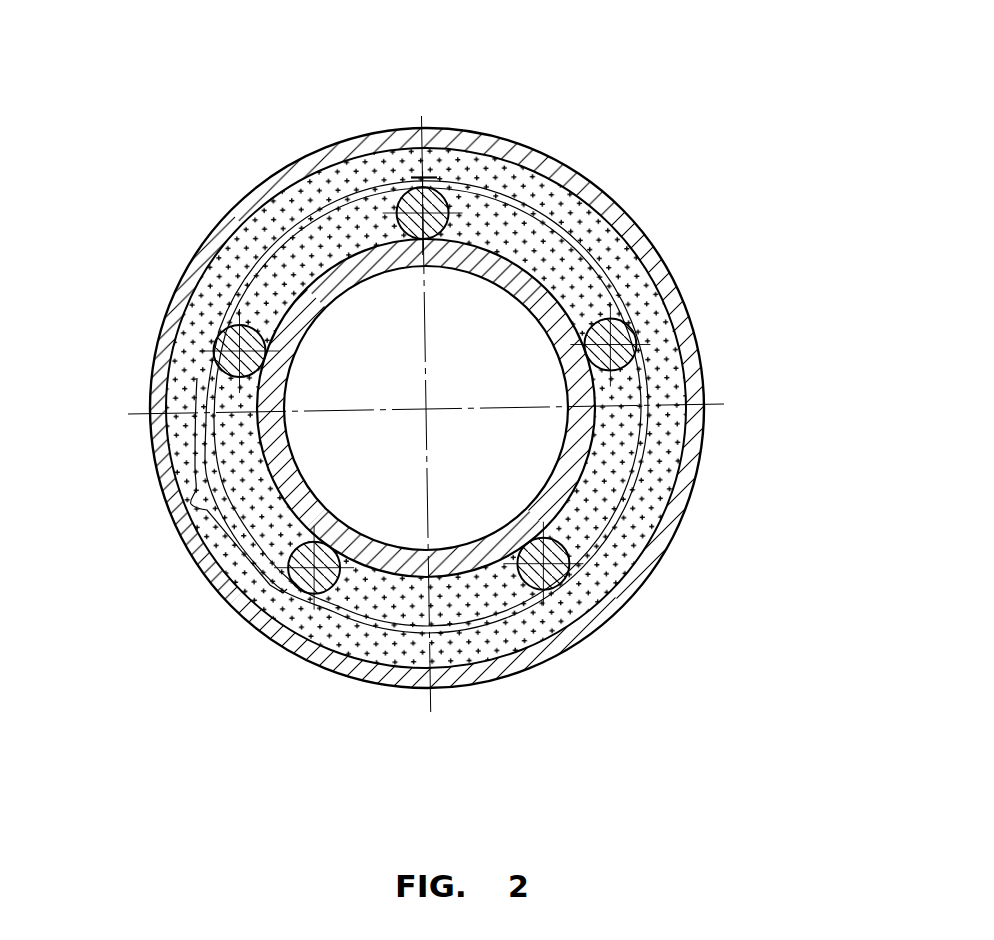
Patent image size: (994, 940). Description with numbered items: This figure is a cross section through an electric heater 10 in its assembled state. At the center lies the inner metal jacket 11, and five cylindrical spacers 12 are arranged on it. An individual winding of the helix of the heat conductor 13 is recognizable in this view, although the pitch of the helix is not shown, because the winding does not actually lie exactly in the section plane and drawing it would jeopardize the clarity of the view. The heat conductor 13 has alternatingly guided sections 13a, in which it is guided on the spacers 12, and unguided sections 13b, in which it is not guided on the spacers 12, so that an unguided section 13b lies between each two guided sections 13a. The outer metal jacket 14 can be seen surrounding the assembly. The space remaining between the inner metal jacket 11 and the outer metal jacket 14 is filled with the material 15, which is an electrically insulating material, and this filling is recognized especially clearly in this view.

The electric heater 10 is at (565, 710).
The inner metal jacket 11 is at (342, 273).
The cylindrical spacers 12 is at (317, 593).
The heat conductor 13 is at (570, 228).
The guided sections 13a is at (438, 176).
The unguided sections 13b is at (185, 510).
The outer metal jacket 14 is at (640, 576).
The material 15 is at (178, 390).